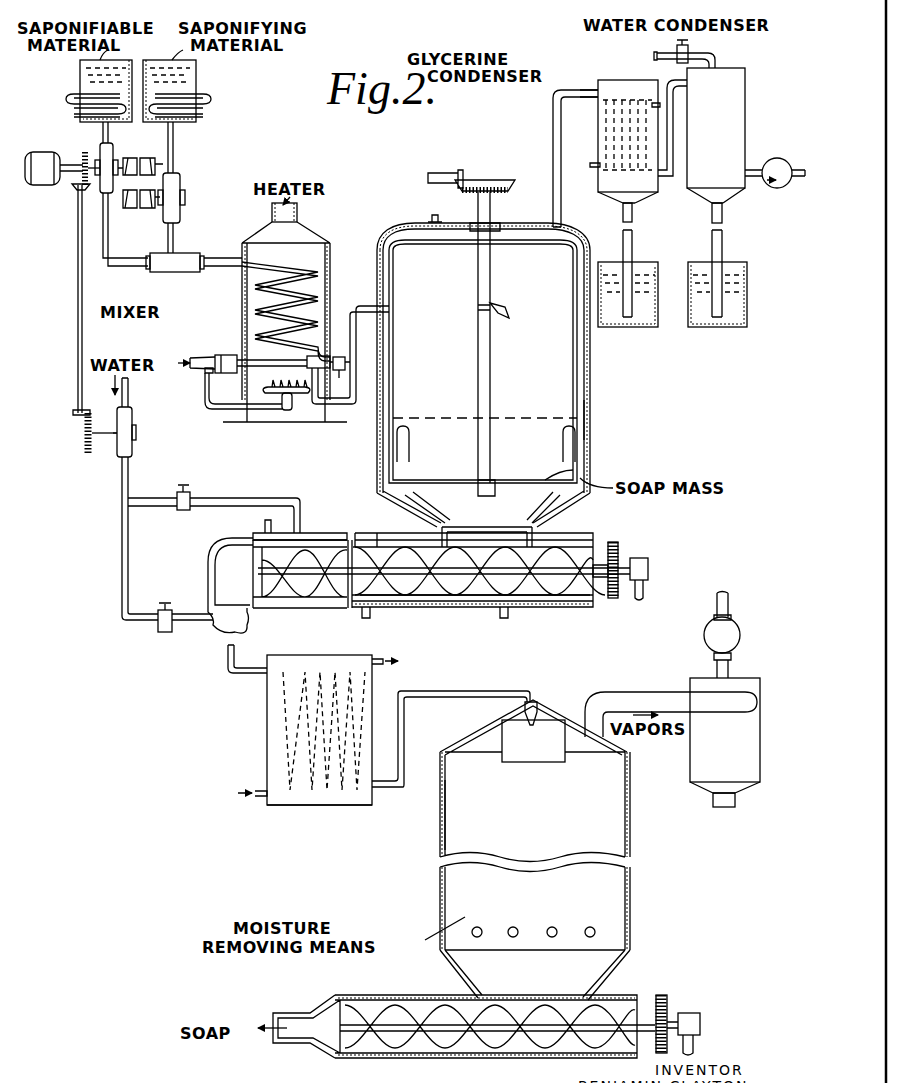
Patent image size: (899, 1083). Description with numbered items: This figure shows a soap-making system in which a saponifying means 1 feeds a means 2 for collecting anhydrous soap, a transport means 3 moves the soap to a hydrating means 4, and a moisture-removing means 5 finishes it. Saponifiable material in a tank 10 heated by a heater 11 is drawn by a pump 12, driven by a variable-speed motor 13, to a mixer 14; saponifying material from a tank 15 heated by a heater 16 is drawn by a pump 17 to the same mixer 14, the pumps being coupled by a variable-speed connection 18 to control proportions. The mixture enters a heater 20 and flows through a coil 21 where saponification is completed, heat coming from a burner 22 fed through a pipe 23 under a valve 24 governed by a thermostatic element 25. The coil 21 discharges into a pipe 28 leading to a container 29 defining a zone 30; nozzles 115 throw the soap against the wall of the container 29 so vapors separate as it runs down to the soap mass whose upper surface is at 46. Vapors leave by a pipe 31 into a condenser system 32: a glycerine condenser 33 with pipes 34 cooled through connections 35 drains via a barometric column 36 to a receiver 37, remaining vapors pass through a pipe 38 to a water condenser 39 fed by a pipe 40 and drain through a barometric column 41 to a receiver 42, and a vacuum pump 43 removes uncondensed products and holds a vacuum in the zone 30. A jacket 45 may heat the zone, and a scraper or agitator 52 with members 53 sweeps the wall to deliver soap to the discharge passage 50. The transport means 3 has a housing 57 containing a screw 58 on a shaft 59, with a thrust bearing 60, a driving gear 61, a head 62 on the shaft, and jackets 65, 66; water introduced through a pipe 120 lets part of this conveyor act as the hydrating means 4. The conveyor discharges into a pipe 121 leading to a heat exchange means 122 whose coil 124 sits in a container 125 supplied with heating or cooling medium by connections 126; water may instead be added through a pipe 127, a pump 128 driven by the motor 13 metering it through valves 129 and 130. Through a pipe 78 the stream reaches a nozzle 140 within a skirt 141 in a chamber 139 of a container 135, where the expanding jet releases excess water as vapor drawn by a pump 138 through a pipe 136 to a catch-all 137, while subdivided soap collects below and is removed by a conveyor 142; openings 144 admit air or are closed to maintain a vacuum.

The saponifying means 1 is at (220, 205).
The means for collecting anhydrous soap 2 is at (392, 222).
The transport means 3 is at (373, 518).
The hydrating means 4 is at (206, 549).
The moisture-removing means 5 is at (418, 897).
The tank 10 is at (80, 75).
The heater 11 is at (100, 118).
The pump 12 is at (113, 150).
The variable-speed motor 13 is at (45, 185).
The mixer 14 is at (165, 274).
The tank 15 is at (196, 62).
The heater 16 is at (180, 115).
The pump 17 is at (180, 185).
The variable-speed connection 18 is at (140, 212).
The heater 20 is at (330, 233).
The coil 21 is at (253, 280).
The burner 22 is at (285, 410).
The pipe 23 is at (188, 358).
The valve 24 is at (205, 375).
The thermostatic element 25 is at (270, 362).
The pipe 28 is at (363, 305).
The container 29 is at (590, 385).
The zone 30 is at (565, 348).
The pipe 31 is at (553, 130).
The condenser system 32 is at (628, 67).
The glycerine condenser 33 is at (598, 88).
The pipes 34 is at (596, 122).
The connections 35 is at (662, 104).
The barometric column 36 is at (632, 213).
The receiver 37 is at (656, 265).
The pipe 38 is at (673, 145).
The water condenser 39 is at (738, 115).
The pipe 40 is at (705, 53).
The barometric column 41 is at (722, 213).
The receiver 42 is at (747, 280).
The vacuum pump 43 is at (778, 188).
The jacket 45 is at (584, 420).
The upper surface of soap mass 46 is at (516, 415).
The discharge passage 50 is at (488, 537).
The scraper or agitator 52 is at (588, 458).
The members 53 is at (410, 449).
The housing 57 is at (450, 596).
The screw 58 is at (528, 585).
The shaft 59 is at (600, 585).
The thrust bearing 60 is at (648, 565).
The gear 61 is at (614, 544).
The head 62 is at (280, 585).
The jacket 65 is at (490, 607).
The jacket 66 is at (328, 533).
The pipe 78 is at (462, 691).
The nozzles 115 is at (516, 308).
The pipe 120 is at (267, 500).
The pipe 121 is at (238, 678).
The heat exchange means 122 is at (267, 735).
The coil 124 is at (283, 760).
The container 125 is at (335, 806).
The connections 126 is at (380, 660).
The pipe 127 is at (122, 590).
The pump 128 is at (132, 432).
The valve 129 is at (182, 510).
The valve 130 is at (163, 634).
The container 135 is at (631, 825).
The pipe 136 is at (640, 692).
The catch-all 137 is at (760, 760).
The pump 138 is at (740, 634).
The chamber 139 is at (475, 815).
The nozzle 140 is at (540, 710).
The skirt 141 is at (500, 756).
The conveyor 142 is at (432, 987).
The openings 144 is at (588, 928).